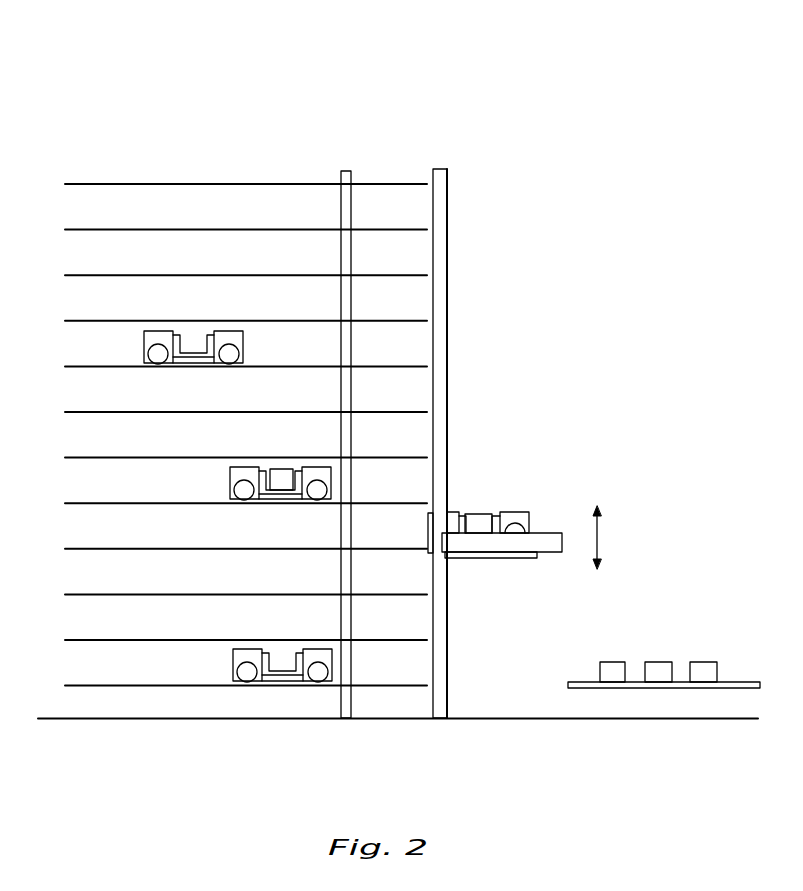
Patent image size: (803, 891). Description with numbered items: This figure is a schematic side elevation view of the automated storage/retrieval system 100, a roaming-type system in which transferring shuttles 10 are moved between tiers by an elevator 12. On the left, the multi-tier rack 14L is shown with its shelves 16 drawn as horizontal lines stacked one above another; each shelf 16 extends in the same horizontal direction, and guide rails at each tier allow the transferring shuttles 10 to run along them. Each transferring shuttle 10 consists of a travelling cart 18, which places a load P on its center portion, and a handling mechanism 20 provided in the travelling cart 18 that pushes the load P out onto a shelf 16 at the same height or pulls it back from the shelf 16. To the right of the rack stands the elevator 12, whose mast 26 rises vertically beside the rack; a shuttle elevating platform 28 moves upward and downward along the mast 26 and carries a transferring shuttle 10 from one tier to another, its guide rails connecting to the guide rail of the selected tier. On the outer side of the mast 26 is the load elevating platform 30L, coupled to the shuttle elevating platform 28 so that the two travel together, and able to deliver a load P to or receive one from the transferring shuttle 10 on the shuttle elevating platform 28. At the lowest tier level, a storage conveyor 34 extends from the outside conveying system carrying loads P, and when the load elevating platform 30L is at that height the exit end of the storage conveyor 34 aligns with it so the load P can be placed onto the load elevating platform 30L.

The automated storage/retrieval system 100 is at (541, 100).
The left multi-tier rack 14L is at (240, 184).
The shelf 16 is at (104, 276).
The elevator 12 is at (447, 160).
The mast 26 is at (445, 375).
The left load elevating platform 30L is at (545, 533).
The shuttle elevating platform 28 is at (488, 558).
The transferring shuttle 10 is at (243, 340).
The travelling cart 18 is at (158, 338).
The handling mechanism 20 is at (183, 345).
The storage conveyor 34 is at (683, 682).
The load P is at (285, 468).